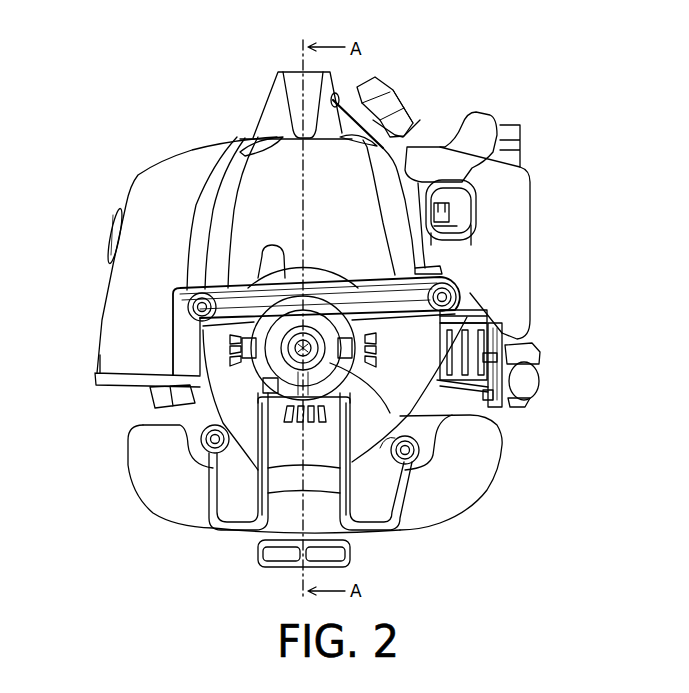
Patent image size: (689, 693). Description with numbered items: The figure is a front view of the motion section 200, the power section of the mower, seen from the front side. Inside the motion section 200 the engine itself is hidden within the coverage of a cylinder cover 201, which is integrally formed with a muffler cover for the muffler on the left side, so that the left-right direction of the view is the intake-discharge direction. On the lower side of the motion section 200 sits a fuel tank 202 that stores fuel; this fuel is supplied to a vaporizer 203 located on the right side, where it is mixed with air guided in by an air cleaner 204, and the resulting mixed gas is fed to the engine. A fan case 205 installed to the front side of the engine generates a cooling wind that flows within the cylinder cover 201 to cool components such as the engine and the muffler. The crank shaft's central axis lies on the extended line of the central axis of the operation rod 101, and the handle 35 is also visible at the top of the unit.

The handle 35 is at (387, 113).
The operation rod 101 is at (410, 456).
The motion section 200 is at (191, 149).
The cylinder cover 201 is at (257, 190).
The fuel tank 202 is at (473, 482).
The vaporizer 203 is at (457, 213).
The air cleaner 204 is at (507, 245).
The fan case 205 is at (213, 357).